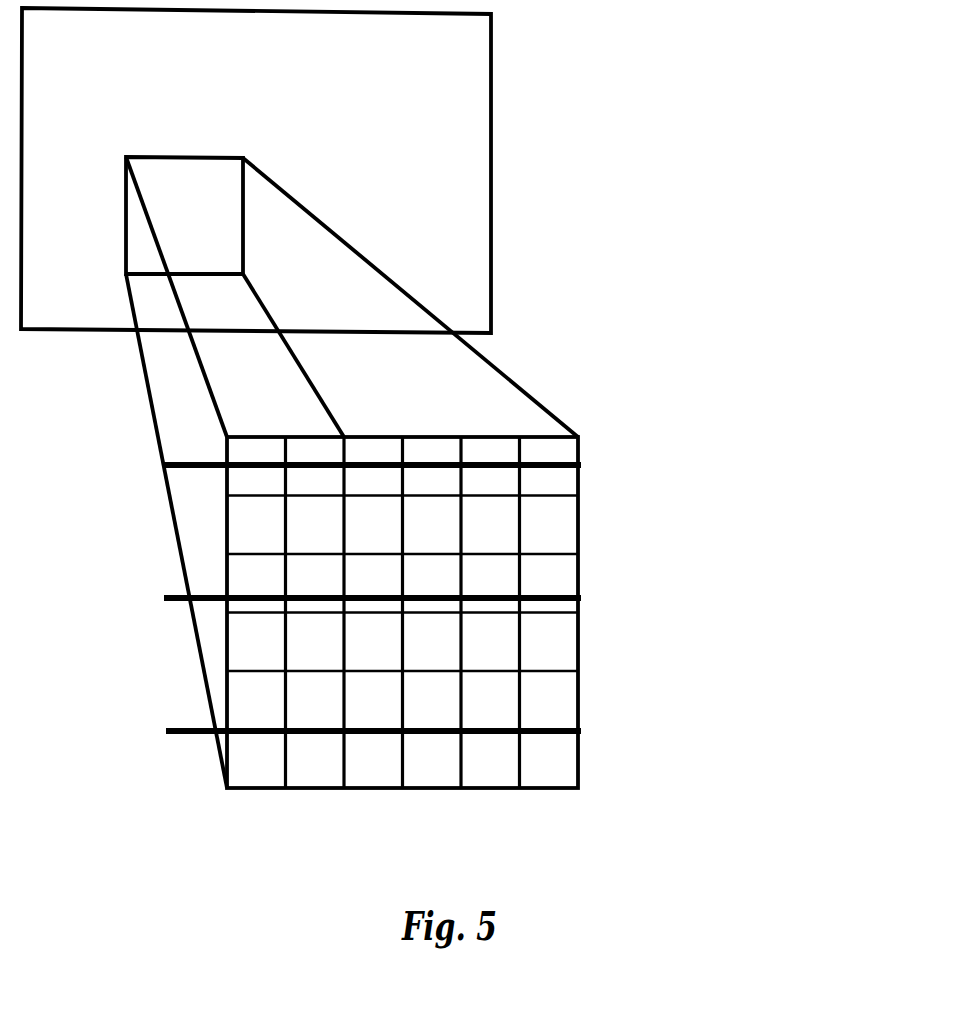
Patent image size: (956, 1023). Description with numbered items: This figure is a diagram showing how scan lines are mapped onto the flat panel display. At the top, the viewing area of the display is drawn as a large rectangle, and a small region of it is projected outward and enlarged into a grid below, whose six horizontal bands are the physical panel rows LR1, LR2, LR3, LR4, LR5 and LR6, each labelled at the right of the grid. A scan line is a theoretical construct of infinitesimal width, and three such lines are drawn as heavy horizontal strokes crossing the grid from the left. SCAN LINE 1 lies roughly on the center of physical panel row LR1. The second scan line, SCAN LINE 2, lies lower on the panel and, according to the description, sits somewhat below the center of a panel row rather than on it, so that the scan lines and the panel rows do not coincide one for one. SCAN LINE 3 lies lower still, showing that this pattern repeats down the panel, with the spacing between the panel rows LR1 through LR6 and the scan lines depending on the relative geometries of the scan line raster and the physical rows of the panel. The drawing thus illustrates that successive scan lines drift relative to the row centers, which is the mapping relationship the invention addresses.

The physical panel row LR1 is at (425, 476).
The physical panel row LR2 is at (426, 535).
The physical panel row LR3 is at (426, 593).
The physical panel row LR4 is at (426, 651).
The physical panel row LR5 is at (426, 710).
The physical panel row LR6 is at (607, 764).
The first scan line SCAN LINE 1 is at (304, 464).
The second scan line SCAN LINE 2 is at (304, 596).
The third scan line SCAN LINE 3 is at (304, 729).